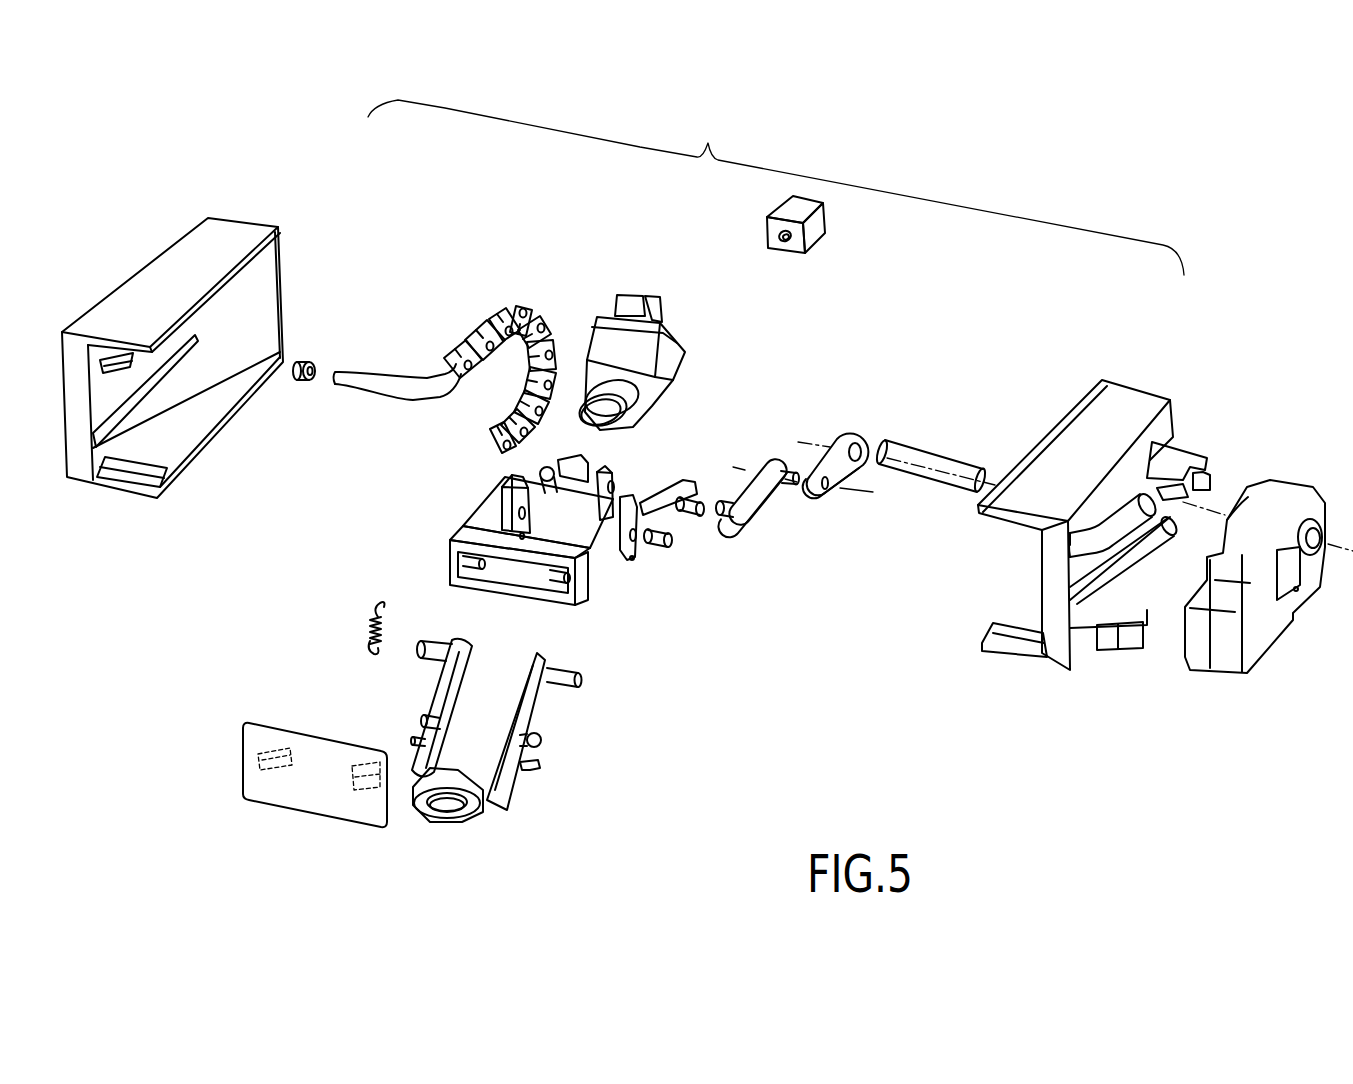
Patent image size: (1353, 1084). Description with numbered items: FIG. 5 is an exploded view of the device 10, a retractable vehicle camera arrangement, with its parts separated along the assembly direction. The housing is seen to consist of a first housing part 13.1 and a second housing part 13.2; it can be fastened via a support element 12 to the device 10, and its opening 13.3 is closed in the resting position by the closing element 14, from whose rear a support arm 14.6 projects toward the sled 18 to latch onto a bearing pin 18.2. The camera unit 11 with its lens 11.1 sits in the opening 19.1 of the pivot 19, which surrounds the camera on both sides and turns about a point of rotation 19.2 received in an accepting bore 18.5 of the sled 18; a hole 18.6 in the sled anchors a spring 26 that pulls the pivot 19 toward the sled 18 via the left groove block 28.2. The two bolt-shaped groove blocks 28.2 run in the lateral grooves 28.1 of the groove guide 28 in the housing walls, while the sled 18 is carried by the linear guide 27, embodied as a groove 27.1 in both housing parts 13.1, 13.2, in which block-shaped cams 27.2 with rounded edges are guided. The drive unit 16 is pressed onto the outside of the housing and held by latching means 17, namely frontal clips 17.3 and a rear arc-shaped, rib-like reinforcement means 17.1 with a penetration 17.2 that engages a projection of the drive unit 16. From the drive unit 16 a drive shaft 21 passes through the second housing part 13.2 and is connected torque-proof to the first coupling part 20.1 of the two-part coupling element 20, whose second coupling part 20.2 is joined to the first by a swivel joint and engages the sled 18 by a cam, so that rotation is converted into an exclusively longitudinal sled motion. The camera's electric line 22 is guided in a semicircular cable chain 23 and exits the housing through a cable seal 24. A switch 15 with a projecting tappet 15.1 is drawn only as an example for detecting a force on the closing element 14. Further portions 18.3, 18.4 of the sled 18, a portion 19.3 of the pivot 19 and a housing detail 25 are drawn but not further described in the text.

The device 10 is at (776, 187).
The camera unit 11 is at (646, 337).
The lens 11.1 is at (627, 427).
The support element 12 is at (611, 439).
The first housing part 13.1 is at (233, 227).
The second housing part 13.2 is at (1127, 397).
The opening 13.3 is at (1000, 575).
The closing element 14 is at (288, 817).
The support arm 14.6 is at (273, 770).
The switch 15 is at (798, 251).
The tappet 15.1 is at (787, 241).
The drive unit 16 is at (1258, 667).
The latching means 17 is at (1218, 421).
The reinforcement means 17.1 is at (1175, 453).
The penetration 17.2 is at (1203, 475).
The clips 17.3 is at (1123, 632).
The sled 18 is at (569, 540).
The bearing pin 18.2 is at (577, 582).
The carrier front frame 18.3 is at (513, 572).
The bearing post 18.4 is at (615, 483).
The accepting bore 18.5 is at (520, 512).
The hole 18.6 is at (548, 470).
The pivot 19 is at (465, 715).
The opening 19.1 is at (447, 797).
The point of rotation 19.2 is at (420, 715).
The lever clip 19.3 is at (540, 766).
The coupling element 20 is at (791, 472).
The first coupling part 20.1 is at (847, 430).
The second coupling part 20.2 is at (770, 460).
The drive shaft 21 is at (948, 455).
The electric line 22 is at (377, 383).
The cable chain 23 is at (493, 300).
The cable seal 24 is at (308, 356).
The housing foot 25 is at (130, 467).
The spring 26 is at (367, 633).
The linear guide 27 is at (1128, 552).
The groove 27.1 is at (147, 370).
The cams 27.2 is at (693, 510).
The groove guide 28 is at (1127, 522).
The lateral groove 28.1 is at (113, 357).
The groove blocks 28.2 is at (428, 642).